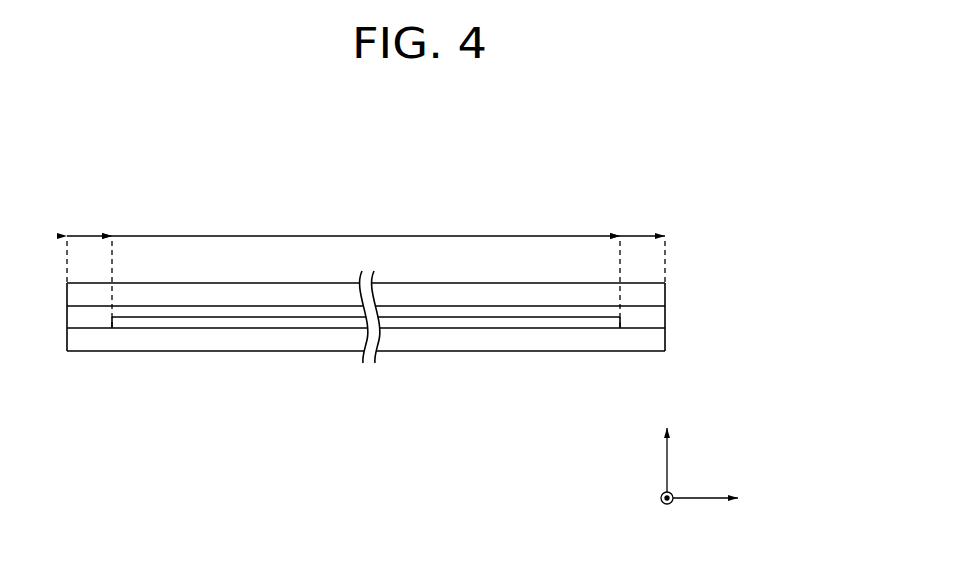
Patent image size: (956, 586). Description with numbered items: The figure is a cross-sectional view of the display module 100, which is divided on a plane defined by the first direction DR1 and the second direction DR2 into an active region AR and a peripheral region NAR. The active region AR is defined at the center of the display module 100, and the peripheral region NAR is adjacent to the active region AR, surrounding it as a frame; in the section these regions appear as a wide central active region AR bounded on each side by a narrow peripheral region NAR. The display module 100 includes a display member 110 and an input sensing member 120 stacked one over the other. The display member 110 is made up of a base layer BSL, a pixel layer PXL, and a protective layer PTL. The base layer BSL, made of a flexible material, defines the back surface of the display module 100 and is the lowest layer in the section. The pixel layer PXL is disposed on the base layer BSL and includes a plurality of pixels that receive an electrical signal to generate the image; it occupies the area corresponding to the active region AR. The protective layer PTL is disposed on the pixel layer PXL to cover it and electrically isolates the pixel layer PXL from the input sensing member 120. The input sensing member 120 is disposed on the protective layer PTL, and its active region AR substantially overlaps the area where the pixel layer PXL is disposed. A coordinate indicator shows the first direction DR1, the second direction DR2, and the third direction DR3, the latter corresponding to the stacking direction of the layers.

The display module 100 is at (579, 171).
The display member 110 is at (760, 290).
The input sensing member 120 is at (657, 292).
The protective layer PTL is at (657, 313).
The pixel layer PXL is at (612, 323).
The base layer BSL is at (657, 340).
The peripheral region NAR is at (366, 244).
The active region AR is at (366, 266).
The first direction DR1 is at (726, 497).
The second direction DR2 is at (667, 516).
The third direction DR3 is at (667, 446).